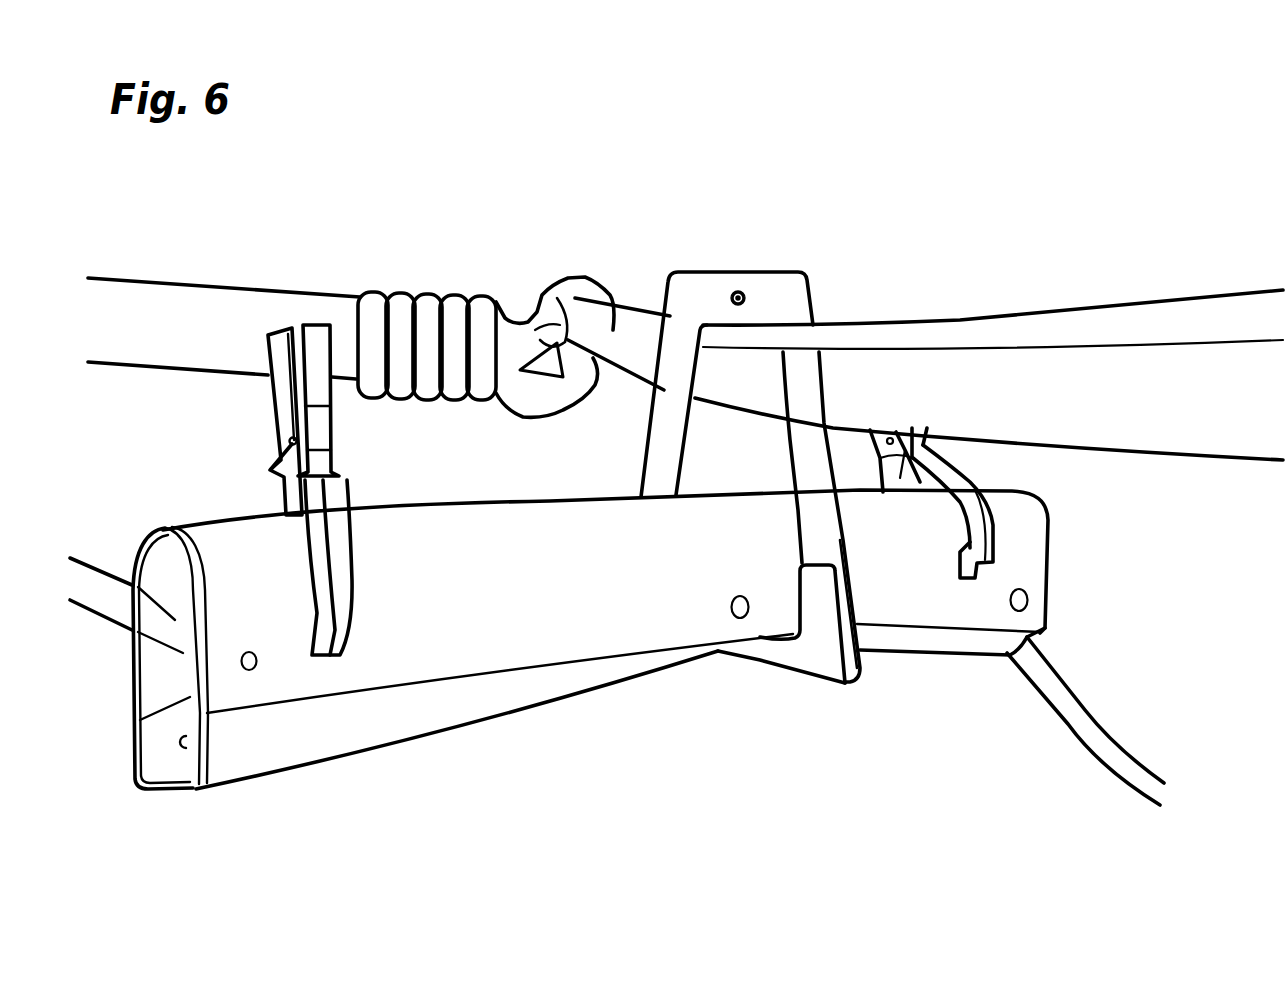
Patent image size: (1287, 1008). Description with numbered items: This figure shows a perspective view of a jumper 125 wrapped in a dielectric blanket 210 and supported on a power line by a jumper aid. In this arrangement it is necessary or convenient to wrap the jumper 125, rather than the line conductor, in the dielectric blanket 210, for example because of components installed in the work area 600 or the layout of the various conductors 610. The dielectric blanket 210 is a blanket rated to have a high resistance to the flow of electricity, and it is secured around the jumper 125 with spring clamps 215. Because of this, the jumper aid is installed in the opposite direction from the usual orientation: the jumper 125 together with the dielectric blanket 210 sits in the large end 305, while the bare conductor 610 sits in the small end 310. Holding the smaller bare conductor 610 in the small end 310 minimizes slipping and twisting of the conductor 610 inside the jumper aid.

The work area 600 is at (166, 207).
The conductor 610 is at (922, 320).
The small end 310 is at (712, 272).
The large end 305 is at (762, 672).
The dielectric blanket 210 is at (132, 697).
The spring clamp 215 is at (281, 445).
The jumper 125 is at (1107, 729).